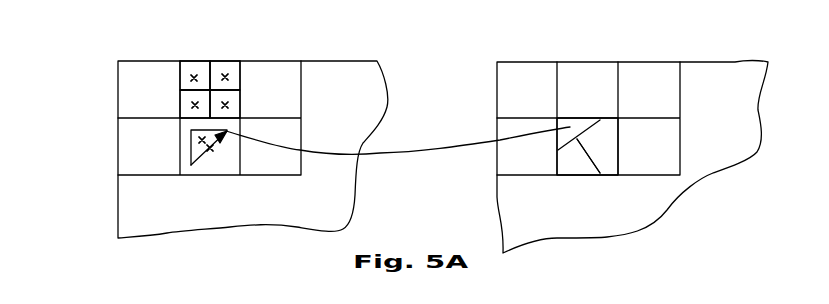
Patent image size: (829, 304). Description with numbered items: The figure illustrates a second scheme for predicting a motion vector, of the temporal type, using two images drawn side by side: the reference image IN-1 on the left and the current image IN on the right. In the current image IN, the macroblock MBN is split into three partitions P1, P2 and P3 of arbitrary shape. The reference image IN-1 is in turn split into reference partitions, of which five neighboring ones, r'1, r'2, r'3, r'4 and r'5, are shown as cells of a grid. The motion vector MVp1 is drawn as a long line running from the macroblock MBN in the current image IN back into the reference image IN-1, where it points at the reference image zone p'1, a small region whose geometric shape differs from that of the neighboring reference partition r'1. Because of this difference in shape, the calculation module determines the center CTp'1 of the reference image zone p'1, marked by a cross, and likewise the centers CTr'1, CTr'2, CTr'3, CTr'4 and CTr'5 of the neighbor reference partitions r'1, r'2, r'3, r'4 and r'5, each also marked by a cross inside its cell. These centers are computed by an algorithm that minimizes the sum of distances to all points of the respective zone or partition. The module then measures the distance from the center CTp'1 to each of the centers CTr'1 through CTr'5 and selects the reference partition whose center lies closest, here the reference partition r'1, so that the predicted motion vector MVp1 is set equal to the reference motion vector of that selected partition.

The reference image IN-1 is at (361, 63).
The current image IN is at (705, 64).
The reference partition r'1 is at (205, 200).
The reference partition r'2 is at (145, 95).
The reference partition r'3 is at (279, 95).
The reference partition r'4 is at (172, 54).
The reference partition r'5 is at (232, 45).
The center of reference partition CTr'1 is at (230, 207).
The center of reference partition CTr'2 is at (119, 128).
The center of reference partition CTr'3 is at (291, 107).
The center of reference partition CTr'4 is at (188, 50).
The center of reference partition CTr'5 is at (268, 56).
The reference image zone p'1 is at (193, 177).
The center of reference image zone CTp'1 is at (129, 169).
The motion vector MVp1 is at (392, 156).
The partition P1 is at (583, 121).
The partition P2 is at (573, 167).
The partition P3 is at (612, 126).
The macroblock MBN is at (592, 177).